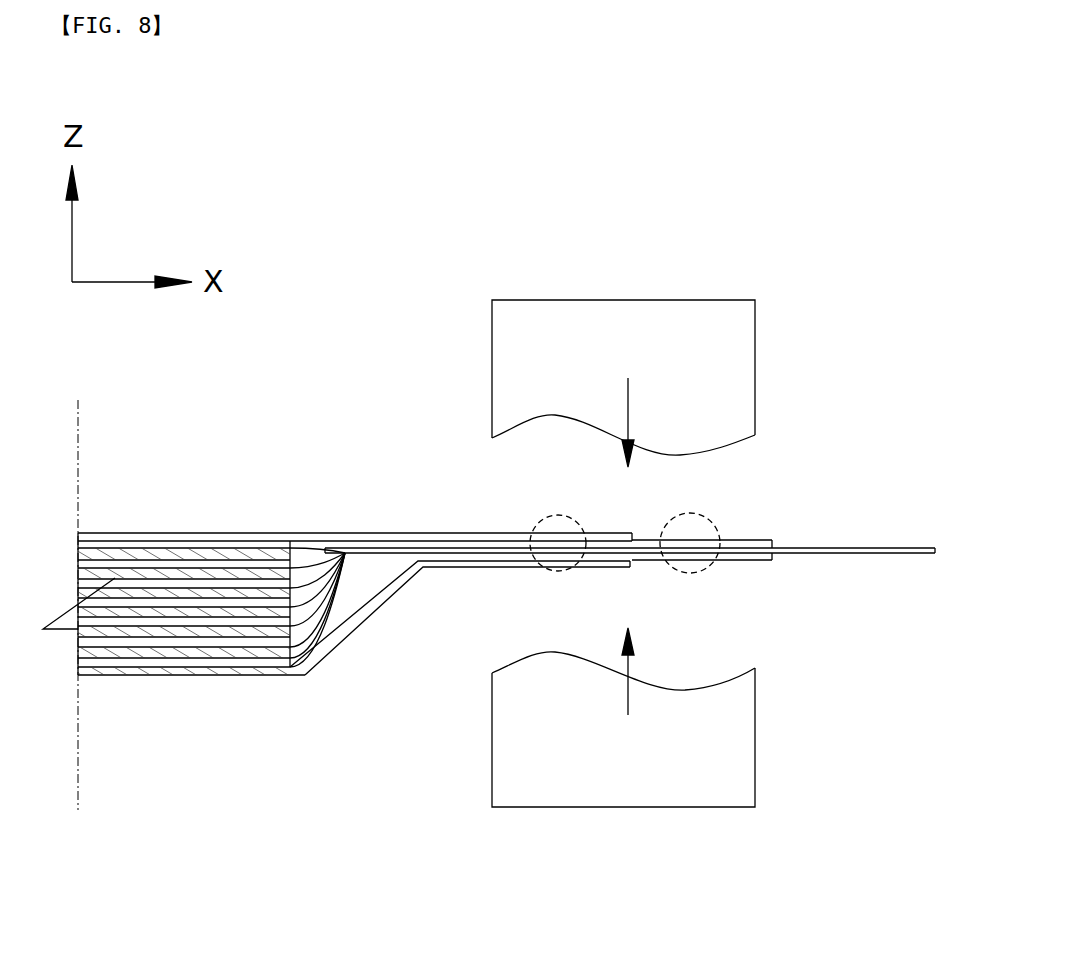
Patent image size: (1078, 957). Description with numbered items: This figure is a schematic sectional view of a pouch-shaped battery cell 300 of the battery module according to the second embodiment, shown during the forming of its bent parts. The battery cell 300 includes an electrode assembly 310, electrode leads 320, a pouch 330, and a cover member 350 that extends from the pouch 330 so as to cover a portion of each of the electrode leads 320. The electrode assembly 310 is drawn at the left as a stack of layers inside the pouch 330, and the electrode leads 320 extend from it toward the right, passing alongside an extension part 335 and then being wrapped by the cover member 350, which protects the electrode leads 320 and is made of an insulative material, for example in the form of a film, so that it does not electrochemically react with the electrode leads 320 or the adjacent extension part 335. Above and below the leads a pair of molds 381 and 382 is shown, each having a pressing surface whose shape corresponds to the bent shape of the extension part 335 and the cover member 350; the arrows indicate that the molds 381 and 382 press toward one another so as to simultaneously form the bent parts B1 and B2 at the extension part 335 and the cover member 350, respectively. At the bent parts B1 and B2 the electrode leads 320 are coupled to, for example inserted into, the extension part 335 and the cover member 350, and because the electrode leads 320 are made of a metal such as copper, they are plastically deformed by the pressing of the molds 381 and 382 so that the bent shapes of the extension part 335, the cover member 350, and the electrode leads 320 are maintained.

The battery cell 300 is at (335, 262).
The electrode assembly 310 is at (250, 658).
The electrode lead 320 is at (918, 556).
The pouch 330 is at (150, 505).
The extension part 335 is at (436, 537).
The cover member 350 is at (752, 538).
The mold 381 is at (680, 325).
The mold 382 is at (685, 767).
The bent part B1 is at (548, 573).
The bent part B2 is at (717, 562).